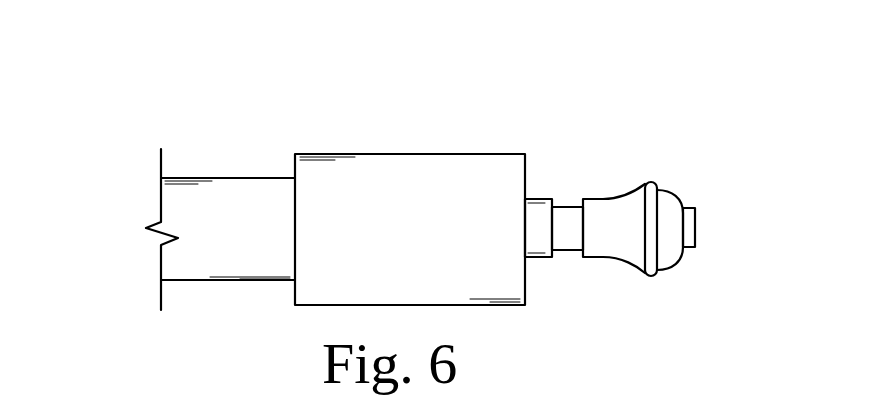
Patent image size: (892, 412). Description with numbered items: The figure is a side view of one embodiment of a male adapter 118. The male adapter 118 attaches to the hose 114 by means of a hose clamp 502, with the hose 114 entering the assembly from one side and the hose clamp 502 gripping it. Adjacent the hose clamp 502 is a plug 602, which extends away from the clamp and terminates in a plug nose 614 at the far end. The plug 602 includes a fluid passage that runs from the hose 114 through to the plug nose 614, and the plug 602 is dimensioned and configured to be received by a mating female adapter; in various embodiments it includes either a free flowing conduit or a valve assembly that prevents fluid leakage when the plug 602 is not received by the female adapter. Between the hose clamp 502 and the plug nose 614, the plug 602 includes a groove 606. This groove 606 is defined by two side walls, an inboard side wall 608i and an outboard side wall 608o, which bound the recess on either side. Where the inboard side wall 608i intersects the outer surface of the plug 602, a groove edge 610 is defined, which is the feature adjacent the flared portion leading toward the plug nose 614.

The male adapter 118 is at (628, 93).
The hose 114 is at (265, 178).
The hose clamp 502 is at (362, 154).
The groove 606 is at (563, 252).
The plug 602 is at (697, 248).
The outboard side wall 608o is at (554, 198).
The inboard side wall 608i is at (583, 199).
The groove edge 610 is at (583, 257).
The plug nose 614 is at (695, 232).